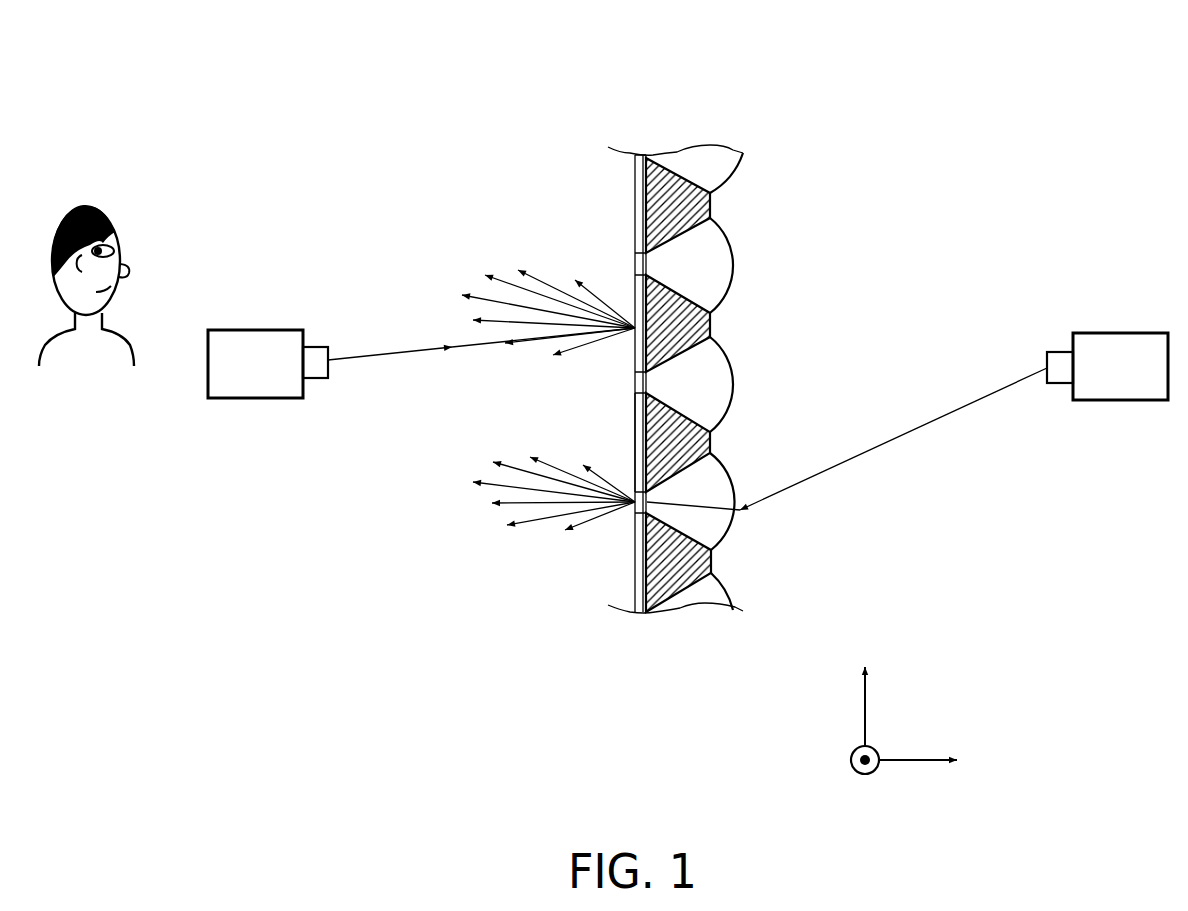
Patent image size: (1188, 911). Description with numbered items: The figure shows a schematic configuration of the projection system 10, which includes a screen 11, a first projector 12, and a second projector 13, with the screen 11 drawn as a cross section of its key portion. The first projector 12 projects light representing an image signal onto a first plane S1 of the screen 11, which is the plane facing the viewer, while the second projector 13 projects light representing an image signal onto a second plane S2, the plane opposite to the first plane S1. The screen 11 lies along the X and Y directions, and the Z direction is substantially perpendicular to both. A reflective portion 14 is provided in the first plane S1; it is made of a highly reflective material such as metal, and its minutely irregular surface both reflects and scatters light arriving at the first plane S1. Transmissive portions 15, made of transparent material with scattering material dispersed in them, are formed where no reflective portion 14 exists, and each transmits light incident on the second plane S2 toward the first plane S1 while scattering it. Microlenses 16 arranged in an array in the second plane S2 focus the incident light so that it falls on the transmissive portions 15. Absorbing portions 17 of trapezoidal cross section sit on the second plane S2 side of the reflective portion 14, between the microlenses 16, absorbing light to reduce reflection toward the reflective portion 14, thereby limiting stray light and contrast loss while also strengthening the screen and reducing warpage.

The projection system 10 is at (602, 72).
The screen 11 is at (787, 132).
The first projector 12 is at (262, 330).
The second projector 13 is at (1130, 333).
The reflective portion 14 is at (637, 185).
The transmissive portion 15 is at (637, 268).
The microlens 16 is at (733, 262).
The absorbing portion 17 is at (713, 317).
The first plane S1 is at (633, 410).
The second plane S2 is at (740, 385).